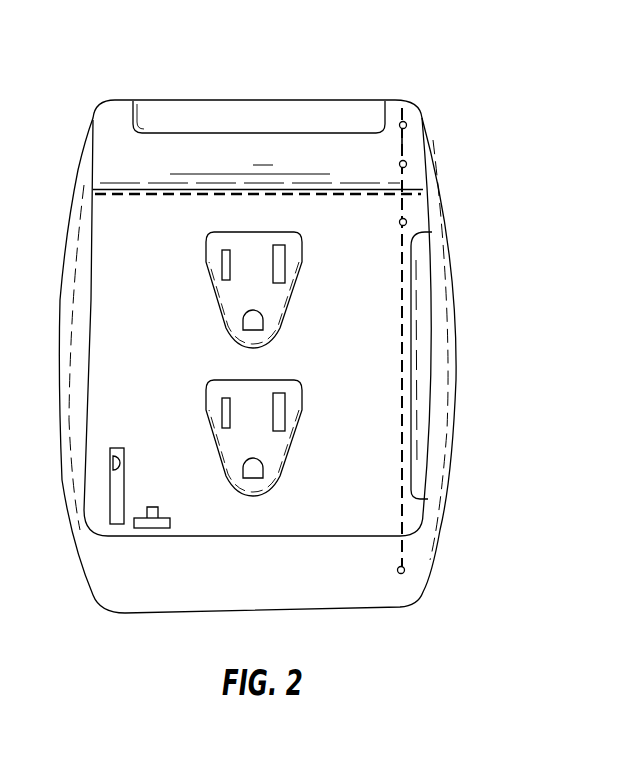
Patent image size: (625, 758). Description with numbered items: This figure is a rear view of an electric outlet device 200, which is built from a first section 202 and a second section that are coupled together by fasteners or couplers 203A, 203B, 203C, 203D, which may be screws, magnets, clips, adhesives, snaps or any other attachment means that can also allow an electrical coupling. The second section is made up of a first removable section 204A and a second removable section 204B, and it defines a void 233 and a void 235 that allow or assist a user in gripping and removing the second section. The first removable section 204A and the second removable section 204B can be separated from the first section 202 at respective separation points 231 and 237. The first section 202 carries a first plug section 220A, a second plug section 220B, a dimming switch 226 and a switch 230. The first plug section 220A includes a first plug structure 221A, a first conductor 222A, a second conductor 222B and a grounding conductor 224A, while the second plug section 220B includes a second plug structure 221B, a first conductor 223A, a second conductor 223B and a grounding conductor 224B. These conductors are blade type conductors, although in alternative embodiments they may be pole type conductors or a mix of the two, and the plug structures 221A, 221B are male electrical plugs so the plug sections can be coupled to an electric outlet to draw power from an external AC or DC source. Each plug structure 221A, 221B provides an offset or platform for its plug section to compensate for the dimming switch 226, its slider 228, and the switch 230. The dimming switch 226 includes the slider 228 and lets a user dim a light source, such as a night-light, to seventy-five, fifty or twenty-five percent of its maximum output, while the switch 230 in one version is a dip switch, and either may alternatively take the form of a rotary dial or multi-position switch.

The electric outlet device 200 is at (118, 46).
The first section 202 is at (227, 207).
The fastener 203A is at (406, 121).
The fastener 203B is at (407, 164).
The fastener 203C is at (407, 222).
The fastener 203D is at (405, 570).
The first removable section 204A is at (417, 210).
The second removable section 204B is at (278, 146).
The first plug section 220A is at (197, 226).
The second plug section 220B is at (197, 374).
The first plug structure 221A is at (272, 231).
The second plug structure 221B is at (272, 379).
The first conductor 222A is at (222, 264).
The second conductor 222B is at (286, 268).
The first conductor 223A is at (222, 412).
The second conductor 223B is at (286, 416).
The grounding conductor 224A is at (262, 322).
The grounding conductor 224B is at (262, 470).
The dimming switch 226 is at (117, 527).
The slider 228 is at (122, 464).
The switch 230 is at (155, 530).
The separation point 231 is at (412, 145).
The void 233 is at (418, 344).
The void 235 is at (210, 108).
The separation point 237 is at (386, 182).